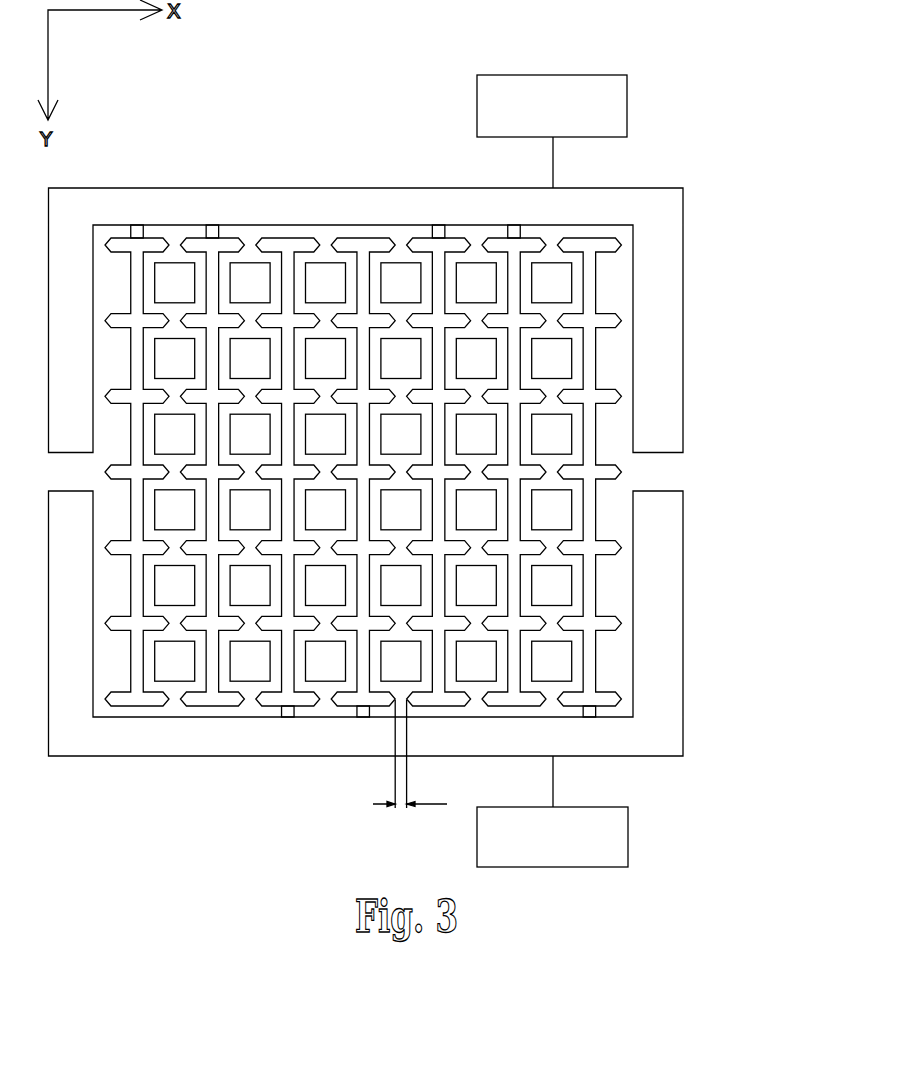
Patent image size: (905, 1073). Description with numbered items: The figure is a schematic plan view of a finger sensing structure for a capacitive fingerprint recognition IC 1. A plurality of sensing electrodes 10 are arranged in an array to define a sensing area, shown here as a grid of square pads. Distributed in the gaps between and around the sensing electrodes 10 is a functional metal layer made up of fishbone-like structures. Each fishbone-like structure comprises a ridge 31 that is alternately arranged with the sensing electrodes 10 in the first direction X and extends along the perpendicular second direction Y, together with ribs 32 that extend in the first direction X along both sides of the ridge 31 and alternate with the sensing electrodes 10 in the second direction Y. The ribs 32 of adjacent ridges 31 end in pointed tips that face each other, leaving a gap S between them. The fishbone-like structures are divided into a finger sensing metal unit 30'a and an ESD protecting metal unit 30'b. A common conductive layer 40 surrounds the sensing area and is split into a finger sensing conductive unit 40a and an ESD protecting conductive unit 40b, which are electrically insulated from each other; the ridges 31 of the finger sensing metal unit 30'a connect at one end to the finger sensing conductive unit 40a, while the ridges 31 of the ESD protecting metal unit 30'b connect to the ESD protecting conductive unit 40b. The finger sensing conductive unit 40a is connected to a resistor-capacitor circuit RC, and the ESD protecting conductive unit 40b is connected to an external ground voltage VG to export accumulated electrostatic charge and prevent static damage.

The finger sensing structure for a capacitive fingerprint recognition IC 1 is at (253, 158).
The sensing electrodes 10 is at (324, 255).
The finger sensing metal unit 30'a is at (326, 181).
The ESD protecting metal unit 30'b is at (436, 766).
The ridge 31 is at (597, 662).
The rib 32 is at (605, 700).
The common conductive layer 40 is at (419, 472).
The finger sensing conductive unit 40a is at (658, 432).
The ESD protecting conductive unit 40b is at (658, 510).
The gap S is at (410, 754).
The resistor-capacitor circuit RC is at (552, 131).
The external ground voltage VG is at (552, 811).